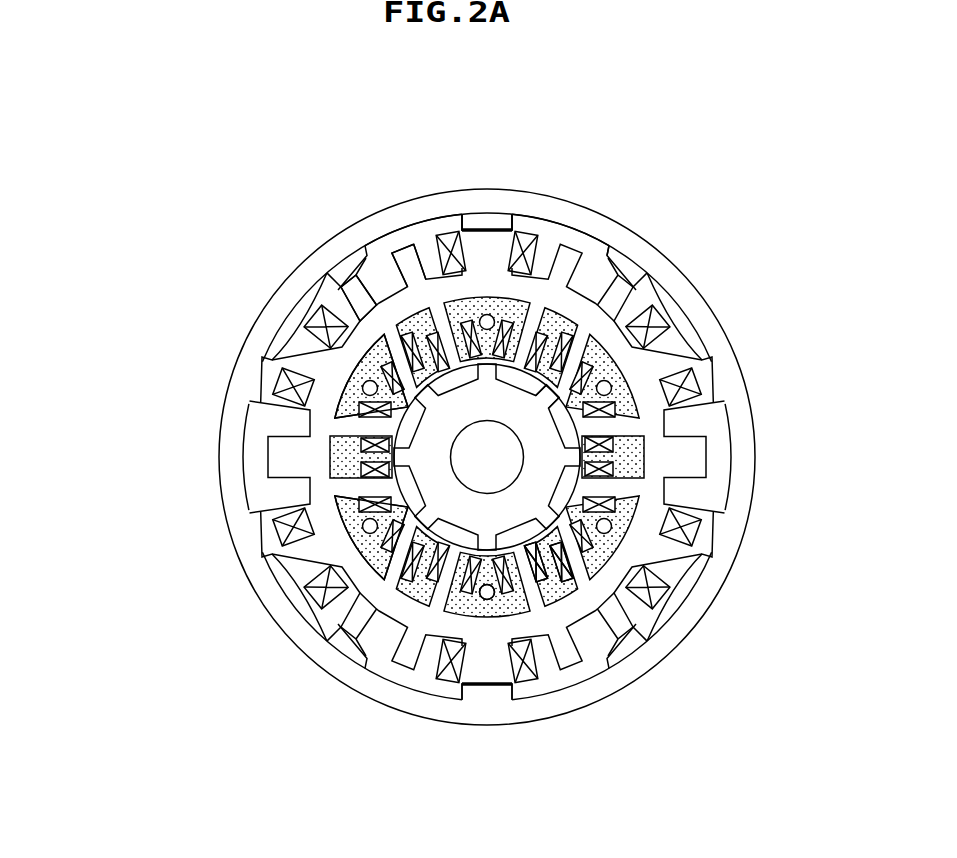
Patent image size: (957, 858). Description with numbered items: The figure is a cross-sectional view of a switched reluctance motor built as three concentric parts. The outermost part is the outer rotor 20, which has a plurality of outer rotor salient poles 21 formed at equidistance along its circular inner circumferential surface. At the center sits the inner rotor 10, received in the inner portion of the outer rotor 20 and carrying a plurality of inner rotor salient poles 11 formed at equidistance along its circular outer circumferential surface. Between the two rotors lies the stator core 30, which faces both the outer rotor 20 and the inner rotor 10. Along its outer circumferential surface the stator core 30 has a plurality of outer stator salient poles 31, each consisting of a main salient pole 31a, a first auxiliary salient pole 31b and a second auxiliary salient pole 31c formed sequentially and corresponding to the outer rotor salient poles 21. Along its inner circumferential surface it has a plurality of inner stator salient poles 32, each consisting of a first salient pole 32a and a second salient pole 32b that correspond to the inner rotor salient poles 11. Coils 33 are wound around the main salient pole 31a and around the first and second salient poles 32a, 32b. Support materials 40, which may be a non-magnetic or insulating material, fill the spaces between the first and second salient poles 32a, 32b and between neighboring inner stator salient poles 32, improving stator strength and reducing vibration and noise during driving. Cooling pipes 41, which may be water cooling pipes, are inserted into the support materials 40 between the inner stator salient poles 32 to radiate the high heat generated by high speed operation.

The inner rotor 10 is at (533, 427).
The inner rotor salient poles 11 is at (540, 392).
The outer rotor 20 is at (640, 232).
The outer rotor salient poles 21 is at (605, 256).
The stator core 30 is at (665, 457).
The outer stator salient poles 31 is at (340, 133).
The main salient pole 31a is at (483, 229).
The first auxiliary salient pole 31b is at (410, 238).
The second auxiliary salient pole 31c is at (352, 277).
The inner stator salient poles 32 is at (133, 408).
The first salient pole 32a is at (352, 422).
The second salient pole 32b is at (352, 494).
The coils 33 is at (592, 546).
The support materials 40 is at (492, 690).
The cooling pipes 41 is at (488, 603).